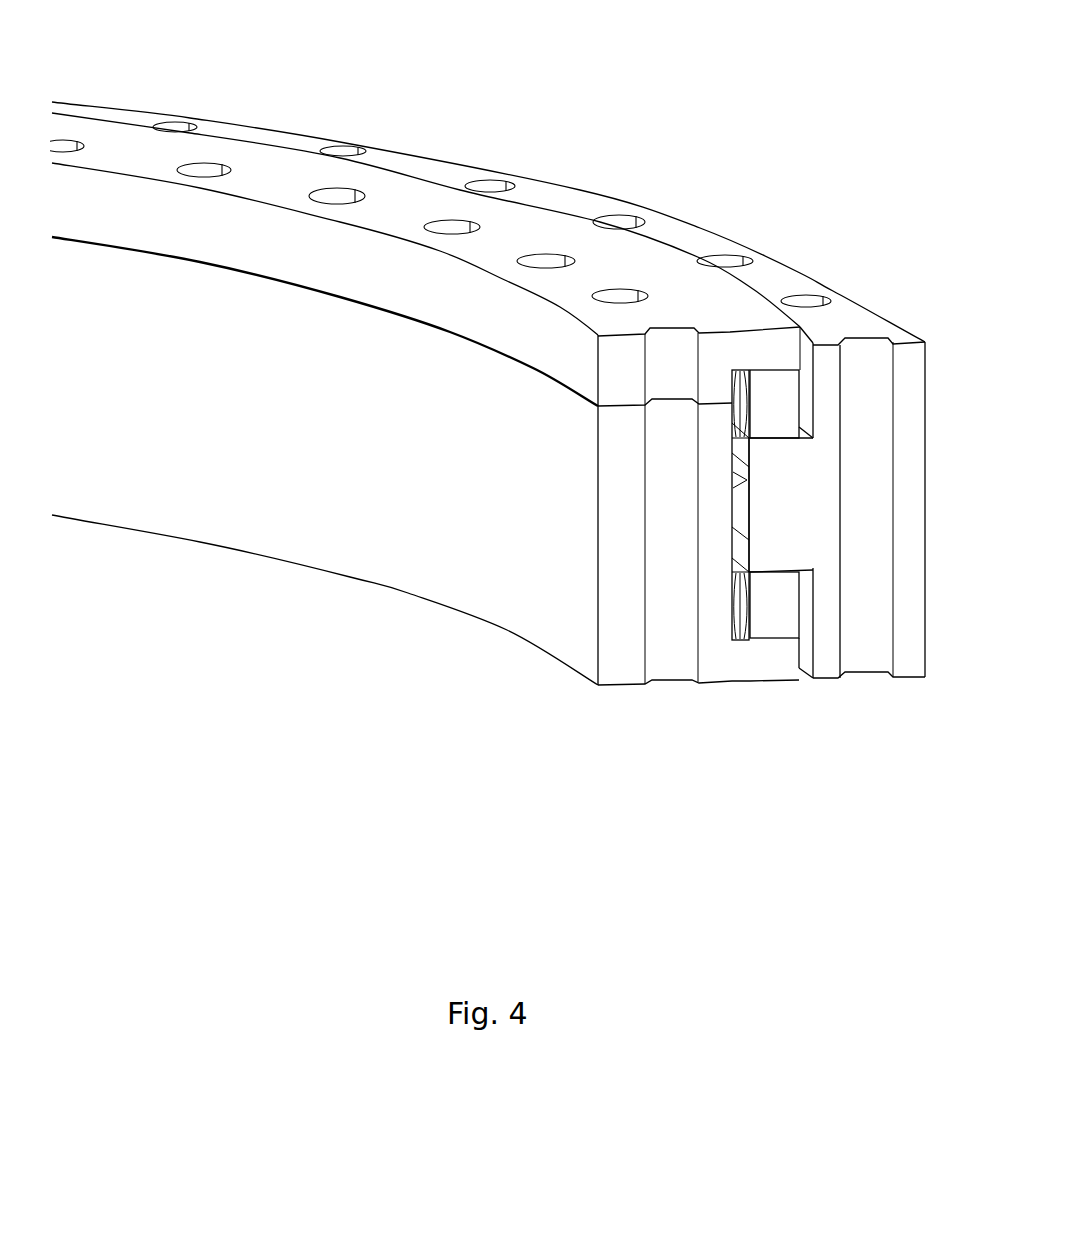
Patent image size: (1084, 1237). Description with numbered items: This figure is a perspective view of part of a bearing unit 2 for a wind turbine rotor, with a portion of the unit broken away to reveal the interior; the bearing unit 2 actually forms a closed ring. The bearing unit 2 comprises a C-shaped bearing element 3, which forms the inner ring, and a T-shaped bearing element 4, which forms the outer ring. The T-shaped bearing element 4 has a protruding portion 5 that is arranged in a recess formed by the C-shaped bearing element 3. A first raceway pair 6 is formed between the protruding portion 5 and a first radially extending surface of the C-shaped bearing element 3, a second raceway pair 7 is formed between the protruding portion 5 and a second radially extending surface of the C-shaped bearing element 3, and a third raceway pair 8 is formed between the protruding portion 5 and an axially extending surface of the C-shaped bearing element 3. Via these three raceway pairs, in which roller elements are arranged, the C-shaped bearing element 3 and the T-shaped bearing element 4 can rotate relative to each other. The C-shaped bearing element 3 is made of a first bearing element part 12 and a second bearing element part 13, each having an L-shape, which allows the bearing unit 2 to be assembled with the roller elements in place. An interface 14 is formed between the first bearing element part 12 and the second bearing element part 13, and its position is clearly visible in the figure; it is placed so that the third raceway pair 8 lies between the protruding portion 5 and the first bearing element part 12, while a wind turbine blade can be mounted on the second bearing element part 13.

The bearing unit 2 is at (762, 90).
The C-shaped bearing element 3 is at (420, 553).
The T-shaped bearing element 4 is at (825, 635).
The protruding portion 5 is at (778, 490).
The first raceway pair 6 is at (777, 402).
The second raceway pair 7 is at (768, 615).
The third raceway pair 8 is at (742, 507).
The first bearing element part 12 is at (620, 643).
The second bearing element part 13 is at (414, 198).
The interface 14 is at (452, 331).